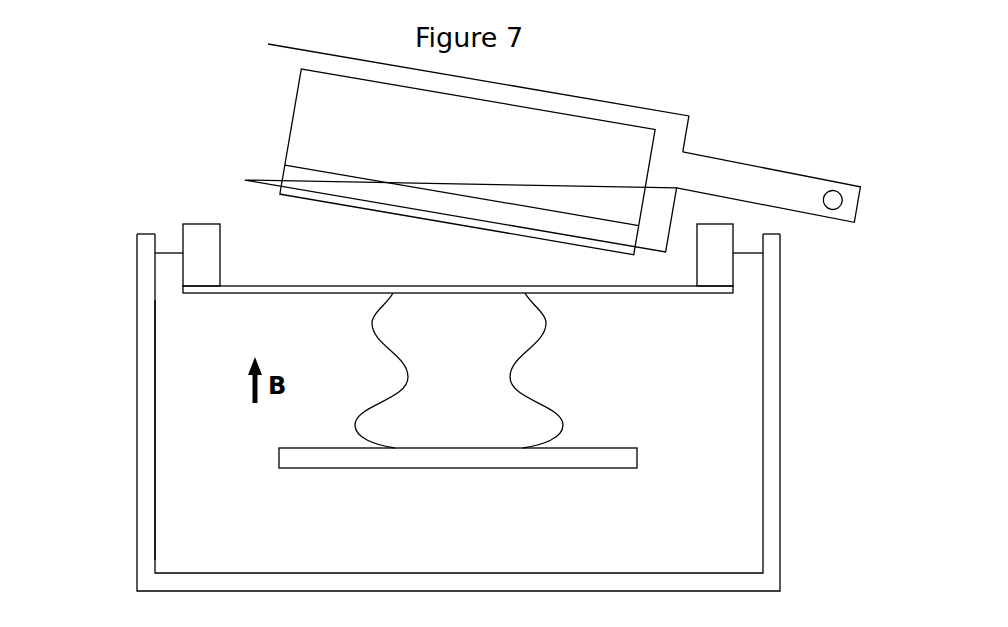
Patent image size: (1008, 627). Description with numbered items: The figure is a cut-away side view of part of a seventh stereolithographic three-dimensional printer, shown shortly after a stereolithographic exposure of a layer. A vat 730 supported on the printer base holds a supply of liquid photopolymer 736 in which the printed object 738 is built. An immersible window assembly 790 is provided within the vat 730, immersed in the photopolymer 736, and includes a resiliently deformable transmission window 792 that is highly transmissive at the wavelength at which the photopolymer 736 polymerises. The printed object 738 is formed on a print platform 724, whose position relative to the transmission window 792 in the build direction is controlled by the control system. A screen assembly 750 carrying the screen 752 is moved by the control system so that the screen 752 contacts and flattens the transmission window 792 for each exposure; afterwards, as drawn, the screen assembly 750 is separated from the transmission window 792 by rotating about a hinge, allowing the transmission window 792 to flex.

The screen assembly 750 is at (692, 120).
The screen 752 is at (492, 220).
The vat 730 is at (780, 423).
The liquid photopolymer 736 is at (187, 513).
The immersible window assembly 790 is at (727, 273).
The transmission window 792 is at (250, 287).
The print platform 724 is at (322, 468).
The 3D printed object 738 is at (480, 392).